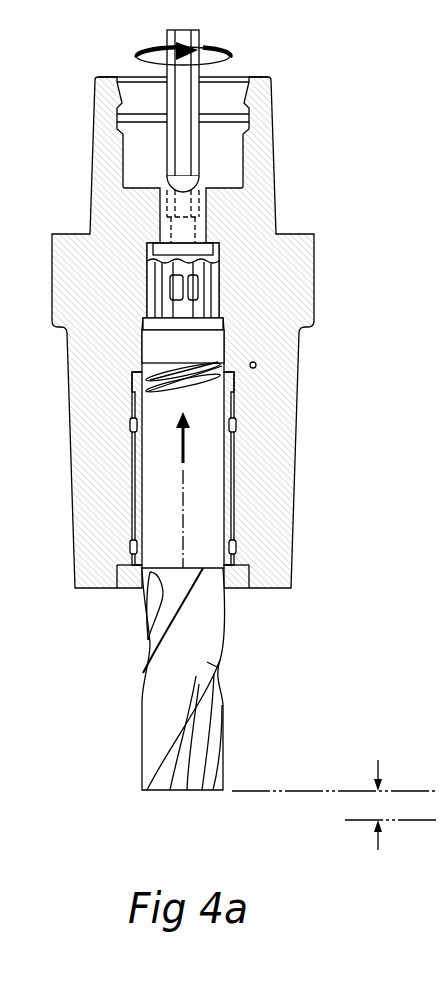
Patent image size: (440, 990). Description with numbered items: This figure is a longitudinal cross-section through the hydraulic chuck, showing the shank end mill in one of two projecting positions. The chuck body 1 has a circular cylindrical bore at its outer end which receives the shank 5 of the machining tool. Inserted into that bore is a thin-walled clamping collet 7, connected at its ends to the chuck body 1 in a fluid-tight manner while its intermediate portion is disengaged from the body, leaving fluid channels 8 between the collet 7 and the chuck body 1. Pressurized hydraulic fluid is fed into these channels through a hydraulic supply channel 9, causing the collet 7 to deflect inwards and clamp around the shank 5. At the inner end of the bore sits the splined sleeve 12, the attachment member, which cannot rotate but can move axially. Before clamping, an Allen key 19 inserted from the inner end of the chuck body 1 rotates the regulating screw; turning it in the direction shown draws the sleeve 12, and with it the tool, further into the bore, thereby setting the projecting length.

The chuck body 1 is at (88, 503).
The shank 5 is at (208, 457).
The clamping collet 7 is at (236, 512).
The fluid channels 8 is at (132, 433).
The hydraulic supply channel 9 is at (256, 366).
The sleeve 12 is at (150, 350).
The Allen key 19 is at (185, 82).